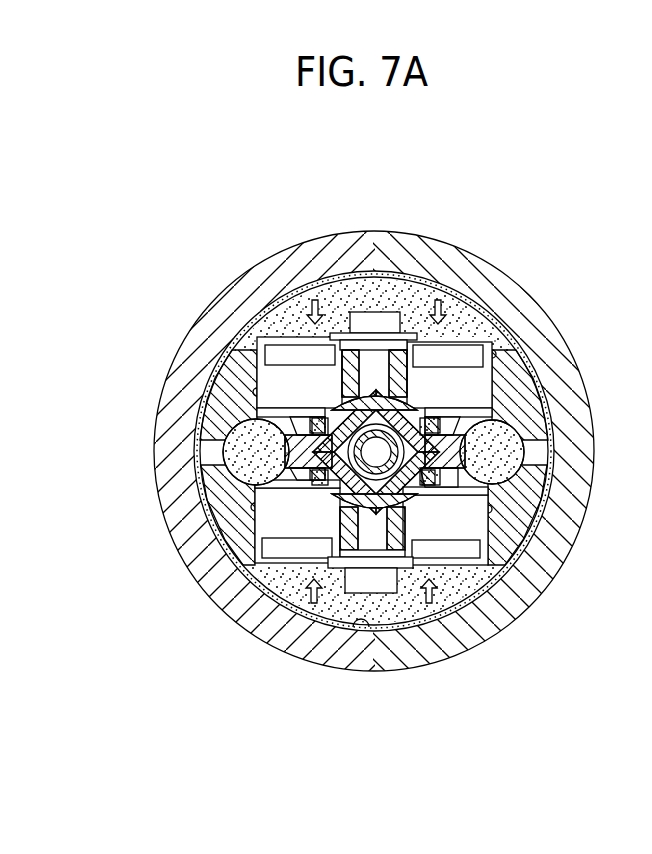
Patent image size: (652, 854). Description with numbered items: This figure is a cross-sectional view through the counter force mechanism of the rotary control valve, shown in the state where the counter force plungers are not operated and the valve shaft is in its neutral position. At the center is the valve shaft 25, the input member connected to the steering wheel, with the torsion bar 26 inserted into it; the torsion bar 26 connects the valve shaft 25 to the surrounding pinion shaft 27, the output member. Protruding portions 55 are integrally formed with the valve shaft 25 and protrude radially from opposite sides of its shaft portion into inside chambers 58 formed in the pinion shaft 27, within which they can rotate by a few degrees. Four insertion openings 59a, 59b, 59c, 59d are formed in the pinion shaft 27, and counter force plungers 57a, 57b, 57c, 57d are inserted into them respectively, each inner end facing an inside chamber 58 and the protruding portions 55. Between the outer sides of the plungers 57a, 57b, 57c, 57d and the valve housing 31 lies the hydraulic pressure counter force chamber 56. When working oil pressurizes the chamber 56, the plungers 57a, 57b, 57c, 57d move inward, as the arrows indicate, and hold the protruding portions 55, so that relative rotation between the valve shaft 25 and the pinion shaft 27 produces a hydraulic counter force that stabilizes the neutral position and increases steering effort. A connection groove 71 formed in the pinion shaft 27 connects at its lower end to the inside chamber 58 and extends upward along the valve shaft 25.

The valve shaft 25 is at (378, 410).
The torsion bar 26 is at (398, 355).
The pinion shaft 27 is at (228, 366).
The valve housing 31 is at (246, 638).
The protruding portions 55 is at (285, 468).
The hydraulic pressure counter force chamber 56 is at (363, 625).
The counter force plunger 57a is at (463, 387).
The counter force plunger 57b is at (223, 352).
The counter force plunger 57c is at (262, 542).
The counter force plunger 57d is at (519, 553).
The inside chambers 58 is at (254, 392).
The insertion opening 59a is at (540, 413).
The insertion opening 59b is at (268, 380).
The insertion opening 59c is at (232, 515).
The insertion opening 59d is at (520, 547).
The connection groove 71 is at (228, 465).